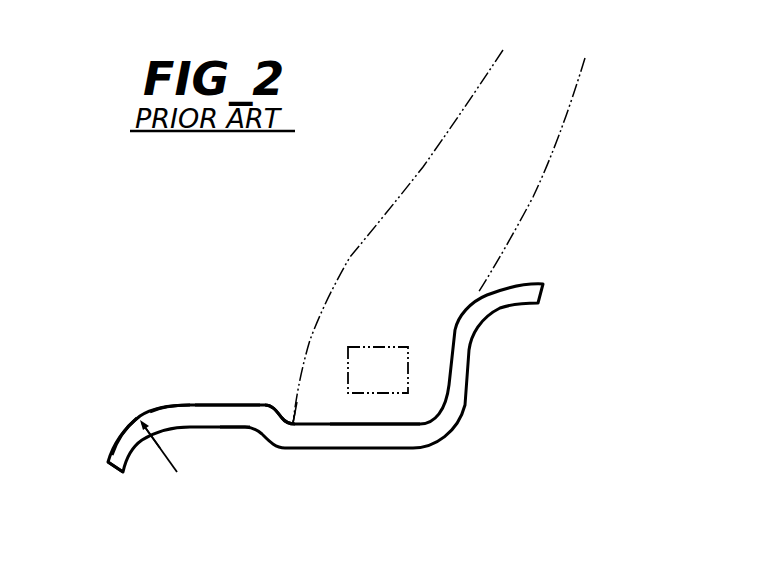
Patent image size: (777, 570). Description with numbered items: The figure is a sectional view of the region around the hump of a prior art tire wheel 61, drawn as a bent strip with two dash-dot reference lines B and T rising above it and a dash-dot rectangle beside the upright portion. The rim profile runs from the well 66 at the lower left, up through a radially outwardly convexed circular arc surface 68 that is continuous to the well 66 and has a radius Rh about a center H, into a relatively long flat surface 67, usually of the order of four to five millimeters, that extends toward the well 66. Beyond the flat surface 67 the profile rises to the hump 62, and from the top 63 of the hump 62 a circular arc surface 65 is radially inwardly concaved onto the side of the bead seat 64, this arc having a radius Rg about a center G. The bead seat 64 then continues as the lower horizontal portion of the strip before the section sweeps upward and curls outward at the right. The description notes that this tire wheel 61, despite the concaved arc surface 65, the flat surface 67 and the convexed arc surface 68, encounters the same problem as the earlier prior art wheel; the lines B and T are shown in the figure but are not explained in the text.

The tire wheel 61 is at (456, 437).
The hump 62 is at (228, 396).
The top 63 is at (187, 403).
The bead seat 64 is at (380, 424).
The circular arc surface 65 is at (278, 415).
The well 66 is at (112, 465).
The flat surface 67 is at (246, 406).
The circular arc surface 68 is at (130, 427).
The bending line B is at (323, 365).
The tangent line T is at (423, 178).
The center G is at (304, 398).
The radius Rg is at (310, 413).
The radius Rh is at (170, 447).
The center H is at (170, 453).